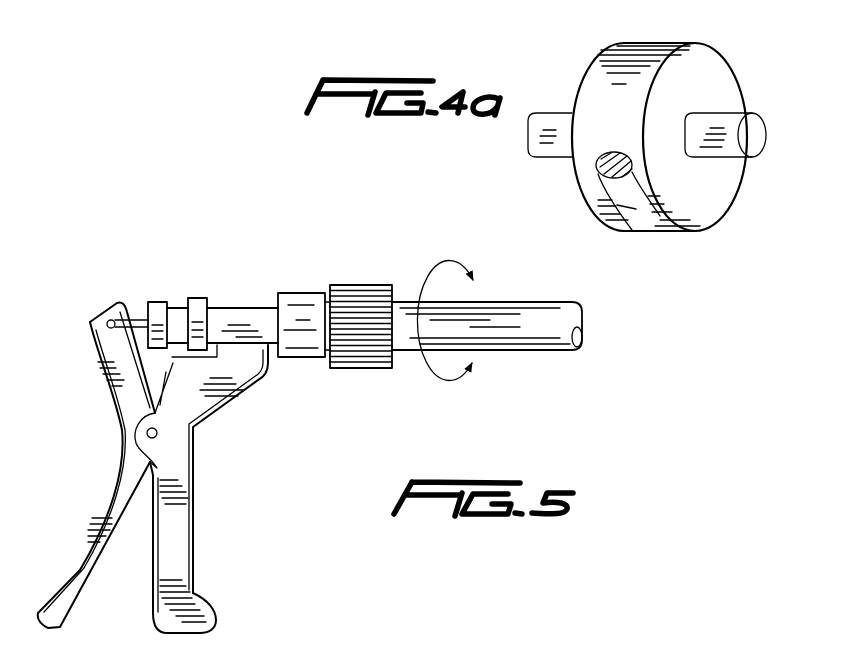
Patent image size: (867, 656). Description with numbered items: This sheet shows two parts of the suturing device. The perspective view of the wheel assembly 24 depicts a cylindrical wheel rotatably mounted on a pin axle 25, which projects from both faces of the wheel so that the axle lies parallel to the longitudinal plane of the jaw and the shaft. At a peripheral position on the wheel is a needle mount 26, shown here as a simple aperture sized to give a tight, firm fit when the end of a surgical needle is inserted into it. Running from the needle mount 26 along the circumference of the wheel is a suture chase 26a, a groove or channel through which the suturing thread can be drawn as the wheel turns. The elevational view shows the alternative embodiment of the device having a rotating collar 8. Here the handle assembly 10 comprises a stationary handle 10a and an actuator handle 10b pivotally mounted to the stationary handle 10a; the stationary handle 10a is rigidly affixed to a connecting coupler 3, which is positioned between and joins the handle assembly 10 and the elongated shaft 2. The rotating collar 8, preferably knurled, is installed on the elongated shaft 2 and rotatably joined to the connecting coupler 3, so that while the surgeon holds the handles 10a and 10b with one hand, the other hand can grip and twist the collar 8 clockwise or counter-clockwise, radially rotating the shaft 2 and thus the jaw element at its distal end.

In FIG. 5, the elongated shaft 2 is at (508, 343).
In FIG. 5, the connecting coupler 3 is at (243, 305).
In FIG. 5, the rotating collar 8 is at (365, 284).
In FIG. 5, the handle assembly 10 is at (151, 467).
In FIG. 5, the stationary handle 10a is at (183, 538).
In FIG. 5, the actuator handle 10b is at (70, 564).
In FIG. 4A, the wheel assembly 24 is at (671, 140).
In FIG. 4A, the pin axle 25 is at (758, 138).
In FIG. 4A, the needle mount 26 is at (601, 174).
In FIG. 4A, the suture chase 26a is at (633, 208).